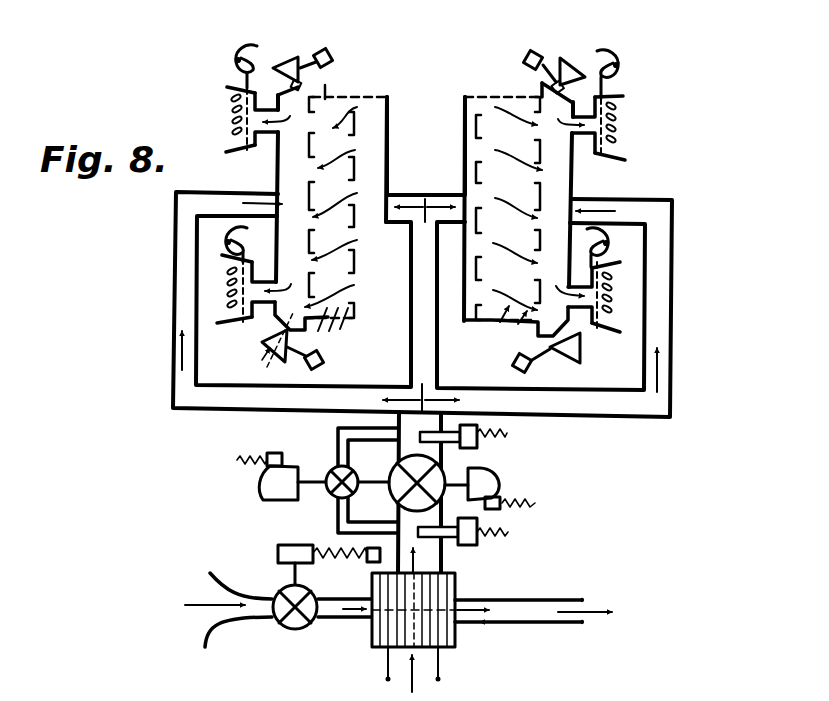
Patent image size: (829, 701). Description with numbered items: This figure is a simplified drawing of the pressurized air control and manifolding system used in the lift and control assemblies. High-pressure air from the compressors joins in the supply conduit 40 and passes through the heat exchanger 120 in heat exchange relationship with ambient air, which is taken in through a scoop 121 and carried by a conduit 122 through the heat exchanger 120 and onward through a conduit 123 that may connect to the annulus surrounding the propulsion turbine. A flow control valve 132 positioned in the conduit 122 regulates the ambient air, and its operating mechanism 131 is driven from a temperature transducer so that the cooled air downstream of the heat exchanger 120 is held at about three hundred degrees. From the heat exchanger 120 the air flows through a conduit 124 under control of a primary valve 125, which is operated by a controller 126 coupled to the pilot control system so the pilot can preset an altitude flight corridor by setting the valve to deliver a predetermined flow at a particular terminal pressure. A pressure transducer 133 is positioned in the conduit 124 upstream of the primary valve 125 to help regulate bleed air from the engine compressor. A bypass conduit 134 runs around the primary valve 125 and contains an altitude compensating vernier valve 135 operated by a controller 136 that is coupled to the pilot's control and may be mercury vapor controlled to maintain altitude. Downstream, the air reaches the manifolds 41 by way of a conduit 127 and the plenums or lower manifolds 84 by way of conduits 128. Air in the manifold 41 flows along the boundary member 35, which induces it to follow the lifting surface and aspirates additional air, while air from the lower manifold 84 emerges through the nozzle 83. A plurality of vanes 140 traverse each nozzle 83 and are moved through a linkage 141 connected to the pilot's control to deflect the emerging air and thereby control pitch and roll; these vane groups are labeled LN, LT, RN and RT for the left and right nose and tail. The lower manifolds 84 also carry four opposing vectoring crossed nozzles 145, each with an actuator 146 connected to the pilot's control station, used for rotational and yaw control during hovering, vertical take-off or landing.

The boundary member 35 is at (352, 83).
The supply conduit 40 is at (428, 195).
The manifold 41 is at (463, 117).
The nozzle 83 is at (257, 135).
The lower manifold 84 is at (278, 182).
The heat exchanger 120 is at (457, 640).
The scoop 121 is at (232, 625).
The conduit 122 is at (347, 613).
The conduit 123 is at (553, 600).
The conduit 124 is at (443, 560).
The primary valve 125 is at (447, 470).
The controller 126 is at (504, 478).
The conduit 127 is at (425, 345).
The conduits 128 is at (185, 402).
The operating mechanism 131 is at (278, 553).
The flow control valve 132 is at (293, 628).
The pressure transducer 133 is at (510, 525).
The bypass conduit 134 is at (337, 522).
The altitude compensating vernier valve 135 is at (372, 463).
The controller 136 is at (263, 485).
The vanes 140 is at (230, 113).
The linkage 141 is at (233, 60).
The vectoring crossed nozzles 145 is at (300, 25).
The actuators 146 is at (333, 53).